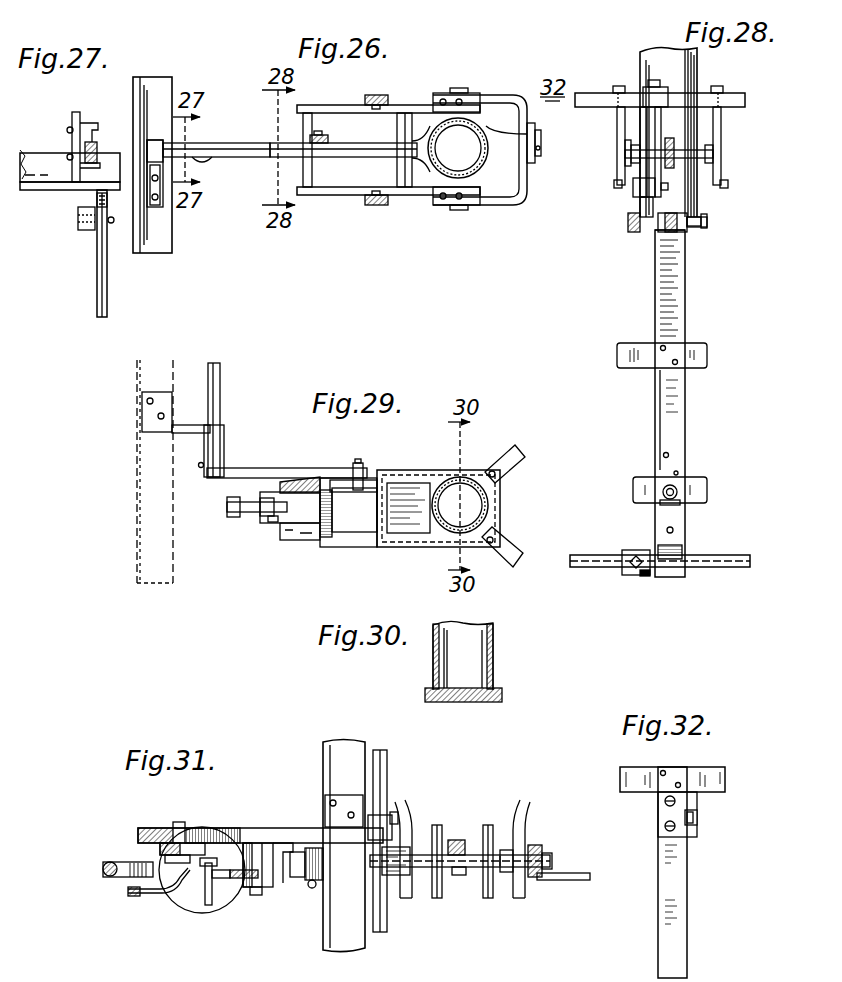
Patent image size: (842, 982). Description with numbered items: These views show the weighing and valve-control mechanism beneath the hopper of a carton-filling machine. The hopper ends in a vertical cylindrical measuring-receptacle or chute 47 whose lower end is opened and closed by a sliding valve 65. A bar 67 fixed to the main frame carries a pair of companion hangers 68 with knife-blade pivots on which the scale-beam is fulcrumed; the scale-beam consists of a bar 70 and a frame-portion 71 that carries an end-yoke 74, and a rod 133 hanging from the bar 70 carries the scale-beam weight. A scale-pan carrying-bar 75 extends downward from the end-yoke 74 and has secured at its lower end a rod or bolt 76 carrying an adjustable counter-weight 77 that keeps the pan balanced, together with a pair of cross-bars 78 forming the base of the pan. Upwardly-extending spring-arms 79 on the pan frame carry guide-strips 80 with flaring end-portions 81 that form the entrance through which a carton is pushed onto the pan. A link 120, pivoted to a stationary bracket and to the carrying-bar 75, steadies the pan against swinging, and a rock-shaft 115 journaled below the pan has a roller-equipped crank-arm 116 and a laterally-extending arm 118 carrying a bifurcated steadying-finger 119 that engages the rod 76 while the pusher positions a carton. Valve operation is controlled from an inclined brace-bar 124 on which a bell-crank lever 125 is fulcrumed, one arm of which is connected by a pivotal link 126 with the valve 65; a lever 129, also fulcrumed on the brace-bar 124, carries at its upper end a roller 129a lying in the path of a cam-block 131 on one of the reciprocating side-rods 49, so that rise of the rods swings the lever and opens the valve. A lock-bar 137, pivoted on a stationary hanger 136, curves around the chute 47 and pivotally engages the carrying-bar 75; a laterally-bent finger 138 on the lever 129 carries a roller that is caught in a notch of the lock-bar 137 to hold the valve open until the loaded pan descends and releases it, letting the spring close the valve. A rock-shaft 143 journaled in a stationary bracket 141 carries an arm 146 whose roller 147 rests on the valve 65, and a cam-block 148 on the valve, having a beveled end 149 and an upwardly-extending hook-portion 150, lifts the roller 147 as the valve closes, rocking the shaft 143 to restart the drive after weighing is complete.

In FIG. 26, the measuring-receptacle or chute 47 is at (458, 148).
In FIG. 28, the measuring-receptacle or chute 47 is at (700, 68).
In FIG. 29, the measuring-receptacle or chute 47 is at (488, 506).
In FIG. 30, the measuring-receptacle or chute 47 is at (494, 650).
In FIG. 31, the side-rods 49 is at (103, 869).
In FIG. 28, the sliding valve 65 is at (695, 228).
In FIG. 29, the sliding valve 65 is at (352, 547).
In FIG. 30, the sliding valve 65 is at (465, 702).
In FIG. 28, the bar 67 is at (746, 100).
In FIG. 26, the hangers or brackets 68 is at (386, 95).
In FIG. 28, the hangers or brackets 68 is at (743, 121).
In FIG. 27, the bar 70 is at (97, 142).
In FIG. 28, the bar 70 is at (672, 165).
In FIG. 26, the frame-portion 71 is at (332, 105).
In FIG. 28, the frame-portion 71 is at (637, 172).
In FIG. 26, the end-yoke 74 is at (515, 205).
In FIG. 32, the end-yoke 74 is at (726, 778).
In FIG. 26, the scale-pan carrying-bar 75 is at (541, 158).
In FIG. 28, the scale-pan carrying-bar 75 is at (688, 303).
In FIG. 31, the scale-pan carrying-bar 75 is at (540, 850).
In FIG. 32, the scale-pan carrying-bar 75 is at (688, 918).
In FIG. 28, the rod or bolt 76 is at (650, 502).
In FIG. 31, the rod or bolt 76 is at (503, 867).
In FIG. 31, the adjustable counter-weight 77 is at (300, 880).
In FIG. 28, the cross-bars 78 is at (710, 490).
In FIG. 28, the springs or spring-arms 79 is at (662, 404).
In FIG. 31, the springs or spring-arms 79 is at (398, 900).
In FIG. 28, the guide-strips 80 is at (620, 355).
In FIG. 31, the guide-strips 80 is at (515, 900).
In FIG. 31, the flaring end-portions 81 is at (516, 803).
In FIG. 28, the rock-shaft 115 is at (725, 567).
In FIG. 31, the rock-shaft 115 is at (387, 758).
In FIG. 31, the crank-arm 116 is at (390, 815).
In FIG. 28, the arm 118 is at (645, 576).
In FIG. 28, the scale-pan steadying-finger 119 is at (685, 548).
In FIG. 31, the scale-pan steadying-finger 119 is at (460, 876).
In FIG. 31, the link 120 is at (588, 880).
In FIG. 31, the inclined brace-bar 124 is at (220, 828).
In FIG. 29, the bell-crank lever 125 is at (235, 515).
In FIG. 31, the bell-crank lever 125 is at (256, 895).
In FIG. 28, the pivotal link 126 is at (670, 232).
In FIG. 27, the lever 129 is at (97, 290).
In FIG. 31, the lever 129 is at (160, 848).
In FIG. 27, the roller 129a is at (78, 222).
In FIG. 31, the cam-block 131 is at (128, 877).
In FIG. 27, the rod 133 is at (209, 165).
In FIG. 31, the rod 133 is at (205, 890).
In FIG. 26, the stationary hanger 136 is at (328, 136).
In FIG. 28, the stationary hanger 136 is at (640, 205).
In FIG. 27, the lock-bar 137 is at (232, 143).
In FIG. 26, the lock-bar 137 is at (546, 130).
In FIG. 28, the lock-bar 137 is at (675, 170).
In FIG. 32, the lock-bar 137 is at (697, 817).
In FIG. 27, the laterally-bent finger 138 is at (107, 203).
In FIG. 29, the stationary bracket 141 is at (185, 425).
In FIG. 29, the rock-shaft 143 is at (220, 367).
In FIG. 28, the arm 146 is at (650, 230).
In FIG. 29, the arm 146 is at (255, 468).
In FIG. 29, the roller 147 is at (370, 478).
In FIG. 29, the cam-block 148 is at (300, 480).
In FIG. 29, the beveled end 149 is at (358, 463).
In FIG. 28, the hook-portion 150 is at (640, 185).